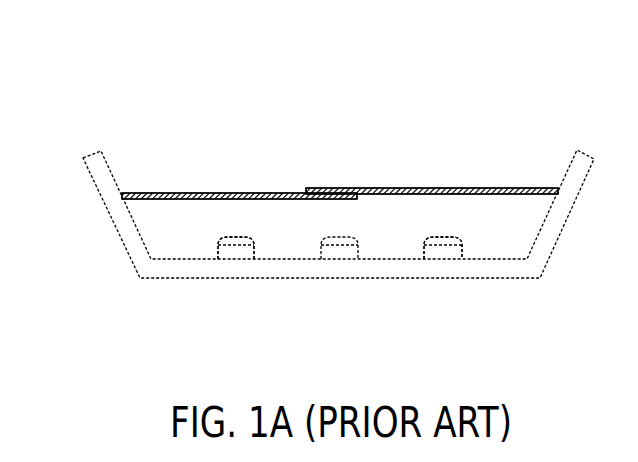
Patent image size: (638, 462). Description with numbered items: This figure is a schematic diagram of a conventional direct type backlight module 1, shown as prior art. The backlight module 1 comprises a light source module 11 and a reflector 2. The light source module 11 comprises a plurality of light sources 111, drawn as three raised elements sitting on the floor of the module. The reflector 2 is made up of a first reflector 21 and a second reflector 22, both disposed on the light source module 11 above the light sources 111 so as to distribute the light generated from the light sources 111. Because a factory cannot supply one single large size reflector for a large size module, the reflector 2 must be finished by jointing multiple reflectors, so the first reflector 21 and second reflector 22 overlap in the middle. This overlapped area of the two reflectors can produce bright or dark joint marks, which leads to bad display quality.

The direct type backlight module 1 is at (80, 89).
The reflector 2 is at (193, 131).
The first reflector 21 is at (202, 191).
The second reflector 22 is at (428, 187).
The light source module 11 is at (257, 345).
The light source 111 is at (254, 252).